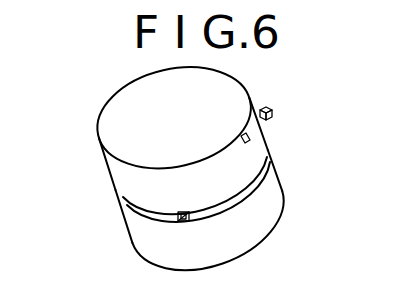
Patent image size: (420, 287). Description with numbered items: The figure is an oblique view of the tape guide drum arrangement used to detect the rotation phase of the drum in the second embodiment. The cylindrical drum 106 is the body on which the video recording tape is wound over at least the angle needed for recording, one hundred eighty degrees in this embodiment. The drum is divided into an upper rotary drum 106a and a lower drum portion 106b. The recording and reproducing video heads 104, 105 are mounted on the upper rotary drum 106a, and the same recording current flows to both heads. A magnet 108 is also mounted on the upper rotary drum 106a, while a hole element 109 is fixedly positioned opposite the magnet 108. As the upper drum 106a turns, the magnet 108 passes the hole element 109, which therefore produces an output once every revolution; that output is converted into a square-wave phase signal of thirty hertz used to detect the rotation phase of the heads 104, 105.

The cylindrical drum 106 is at (203, 161).
The upper rotary drum 106a is at (268, 139).
The lower casing portion 106b is at (276, 192).
The magnet 108 is at (246, 131).
The hole element 109 is at (273, 114).
The rotary head 104 is at (256, 249).
The rotary head 105 is at (189, 218).